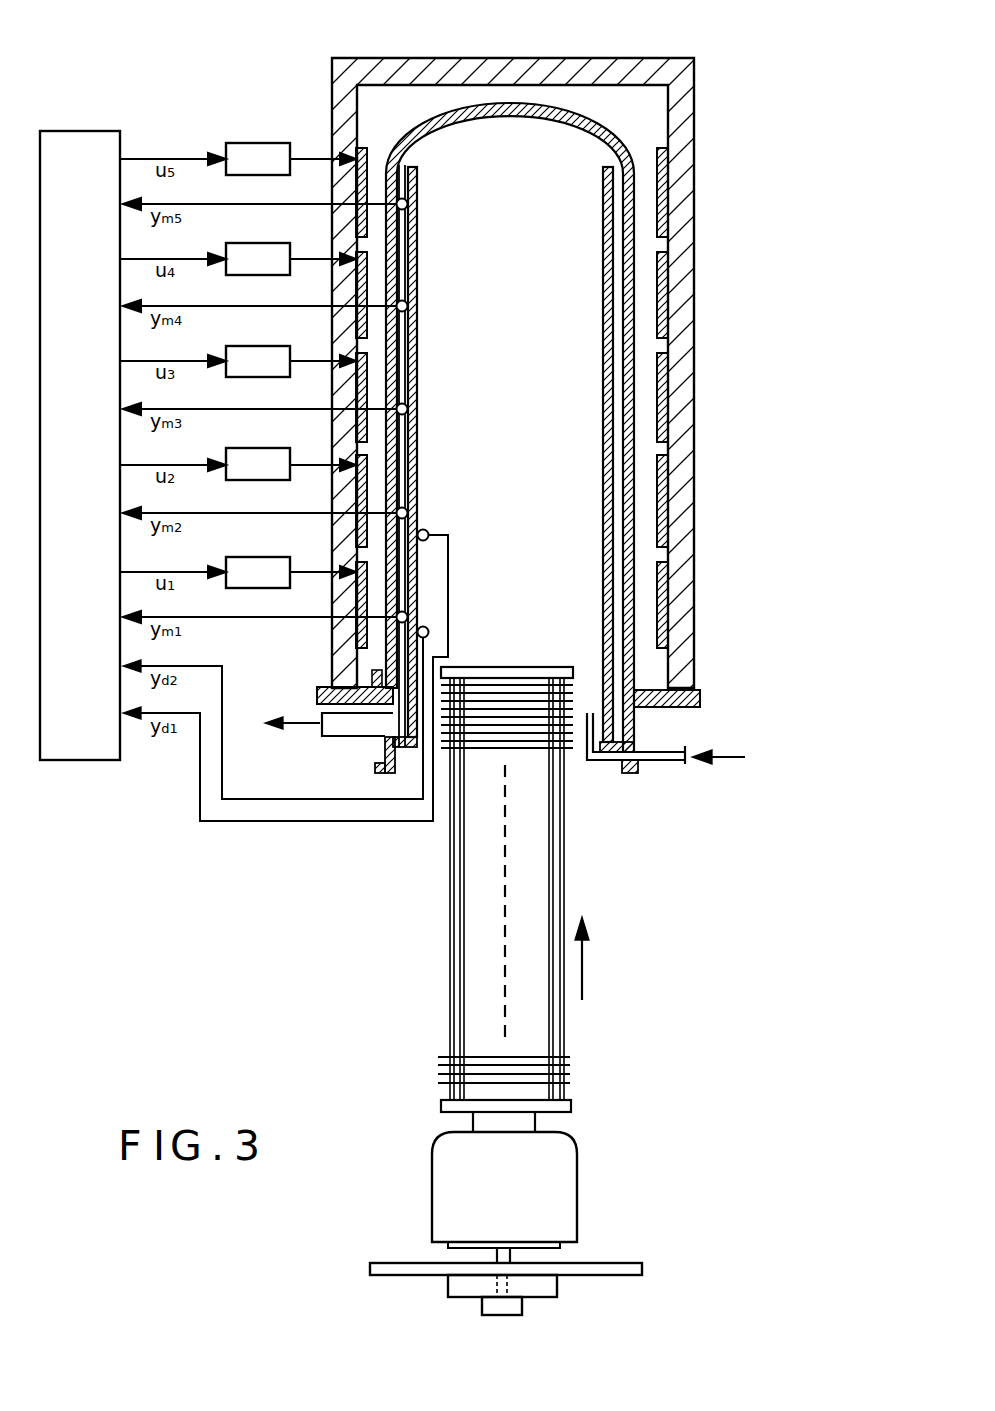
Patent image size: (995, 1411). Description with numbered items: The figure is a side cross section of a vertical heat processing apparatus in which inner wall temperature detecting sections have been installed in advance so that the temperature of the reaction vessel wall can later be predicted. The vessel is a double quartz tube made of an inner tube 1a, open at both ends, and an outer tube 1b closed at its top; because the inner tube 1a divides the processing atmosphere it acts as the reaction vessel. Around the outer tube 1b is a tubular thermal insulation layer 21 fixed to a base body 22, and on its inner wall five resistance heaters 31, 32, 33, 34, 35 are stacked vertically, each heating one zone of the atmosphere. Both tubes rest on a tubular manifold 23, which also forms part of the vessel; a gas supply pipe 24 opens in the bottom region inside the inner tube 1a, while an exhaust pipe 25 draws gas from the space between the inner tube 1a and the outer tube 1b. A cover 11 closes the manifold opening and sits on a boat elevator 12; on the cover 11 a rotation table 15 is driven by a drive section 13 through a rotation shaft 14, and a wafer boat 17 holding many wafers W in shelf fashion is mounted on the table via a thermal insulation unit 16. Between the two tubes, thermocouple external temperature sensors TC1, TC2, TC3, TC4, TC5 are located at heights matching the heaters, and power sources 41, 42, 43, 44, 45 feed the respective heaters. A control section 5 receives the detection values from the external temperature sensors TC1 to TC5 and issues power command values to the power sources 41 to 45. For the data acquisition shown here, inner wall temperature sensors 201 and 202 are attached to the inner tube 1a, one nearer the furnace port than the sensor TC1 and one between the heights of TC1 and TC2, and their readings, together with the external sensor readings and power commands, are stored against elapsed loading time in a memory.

The inner quartz tube 1a is at (606, 165).
The outer quartz tube 1b is at (455, 106).
The control section 5 is at (88, 131).
The cover 11 is at (605, 1277).
The boat elevator 12 is at (537, 1298).
The drive section 13 is at (505, 1318).
The rotation shaft 14 is at (495, 1252).
The rotation table 15 is at (447, 1249).
The thermal insulation unit 16 is at (578, 1190).
The wafer boat 17 is at (564, 875).
The thermal insulation layer 21 is at (696, 120).
The base body 22 is at (688, 707).
The manifold 23 is at (636, 730).
The gas supply pipe 24 is at (662, 764).
The exhaust pipe 25 is at (350, 737).
The heater 31 is at (662, 625).
The heater 32 is at (660, 490).
The heater 33 is at (662, 395).
The heater 34 is at (662, 298).
The heater 35 is at (662, 190).
The power source 41 is at (256, 557).
The power source 42 is at (256, 448).
The power source 43 is at (256, 346).
The power source 44 is at (256, 244).
The power source 45 is at (256, 144).
The inner wall temperature sensor 201 is at (428, 630).
The inner wall temperature sensor 202 is at (427, 531).
The external temperature sensor TC1 is at (398, 620).
The external temperature sensor TC2 is at (398, 511).
The external temperature sensor TC3 is at (398, 407).
The external temperature sensor TC4 is at (398, 304).
The external temperature sensor TC5 is at (402, 198).
The wafer W is at (533, 750).